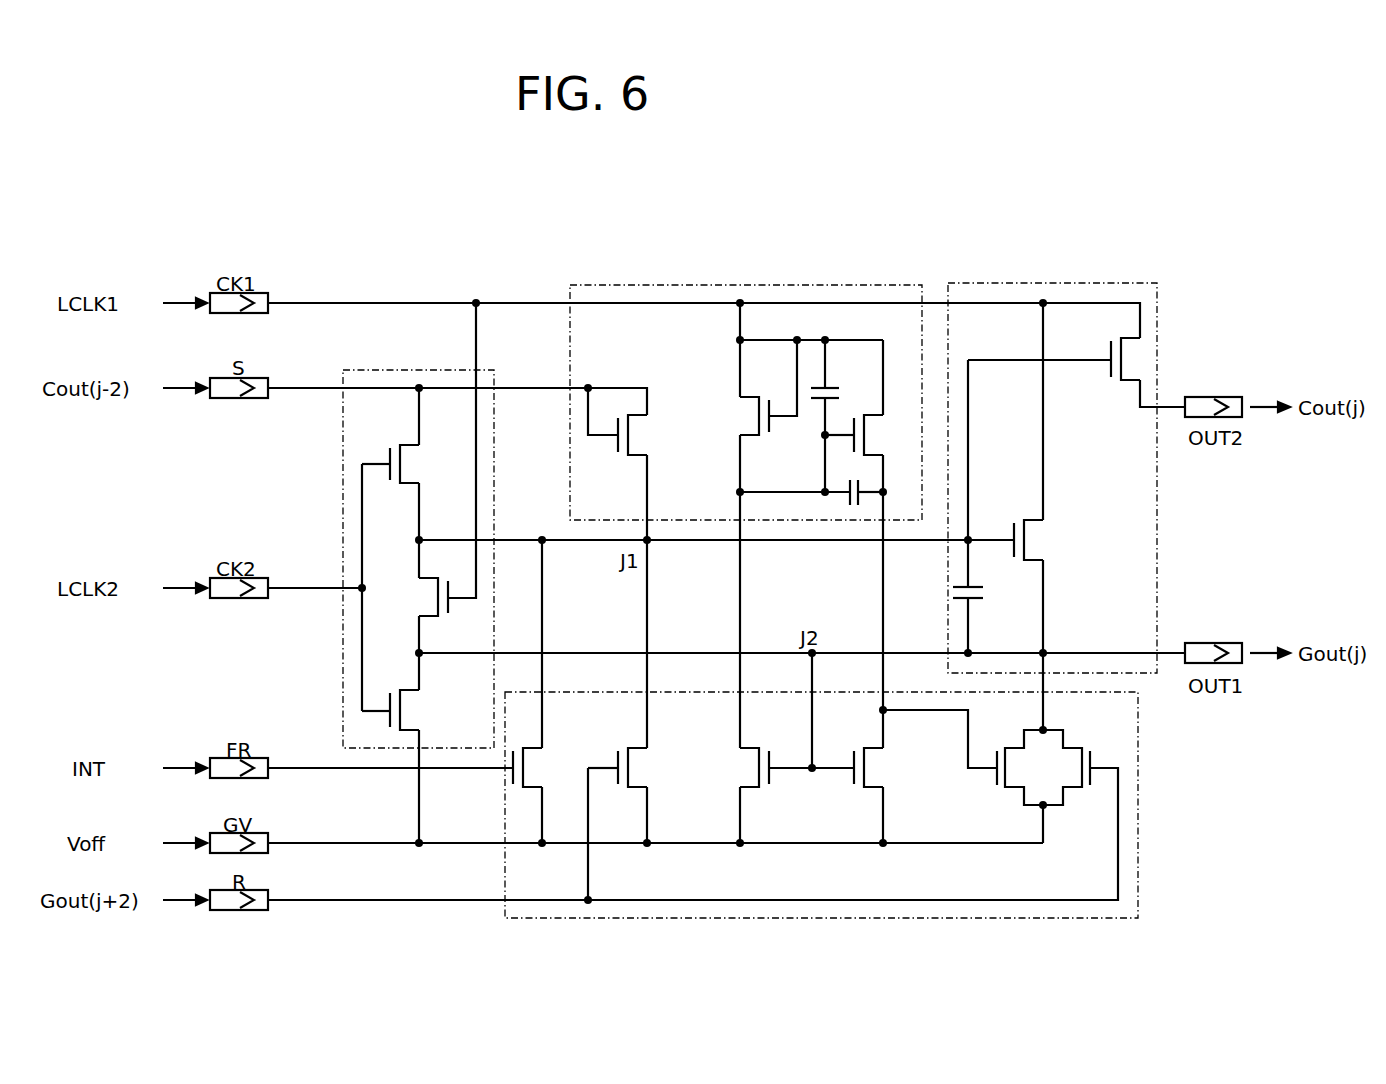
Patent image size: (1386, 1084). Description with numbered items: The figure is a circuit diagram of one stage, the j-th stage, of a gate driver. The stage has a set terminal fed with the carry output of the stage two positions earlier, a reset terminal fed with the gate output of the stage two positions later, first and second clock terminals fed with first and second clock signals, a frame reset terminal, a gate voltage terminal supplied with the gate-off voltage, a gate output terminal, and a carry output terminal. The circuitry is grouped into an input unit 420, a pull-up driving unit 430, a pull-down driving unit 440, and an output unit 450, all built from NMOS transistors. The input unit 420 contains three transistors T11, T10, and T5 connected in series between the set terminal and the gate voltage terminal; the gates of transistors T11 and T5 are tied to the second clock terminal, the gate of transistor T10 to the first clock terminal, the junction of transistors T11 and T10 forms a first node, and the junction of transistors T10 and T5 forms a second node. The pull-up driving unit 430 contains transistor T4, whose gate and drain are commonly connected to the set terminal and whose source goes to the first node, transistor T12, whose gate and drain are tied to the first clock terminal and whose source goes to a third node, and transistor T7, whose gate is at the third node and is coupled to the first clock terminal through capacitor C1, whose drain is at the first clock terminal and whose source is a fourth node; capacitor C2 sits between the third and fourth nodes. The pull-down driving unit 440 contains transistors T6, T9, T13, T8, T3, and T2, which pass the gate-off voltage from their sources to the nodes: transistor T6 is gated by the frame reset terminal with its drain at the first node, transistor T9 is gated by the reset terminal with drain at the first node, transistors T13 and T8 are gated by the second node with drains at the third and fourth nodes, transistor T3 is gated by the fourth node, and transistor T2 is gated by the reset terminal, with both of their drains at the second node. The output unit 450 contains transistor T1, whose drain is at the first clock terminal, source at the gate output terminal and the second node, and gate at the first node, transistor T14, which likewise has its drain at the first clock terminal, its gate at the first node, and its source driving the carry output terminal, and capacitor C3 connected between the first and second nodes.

The input unit 420 is at (418, 368).
The pull-up driving unit 430 is at (740, 283).
The pull-down driving unit 440 is at (1138, 805).
The output unit 450 is at (1050, 283).
The transistor T1 is at (1039, 540).
The transistor T2 is at (1082, 753).
The transistor T3 is at (1039, 767).
The transistor T4 is at (644, 435).
The transistor T5 is at (412, 710).
The transistor T6 is at (540, 767).
The transistor T7 is at (882, 435).
The transistor T8 is at (882, 767).
The transistor T9 is at (645, 767).
The transistor T10 is at (419, 597).
The transistor T11 is at (418, 464).
The transistor T12 is at (741, 416).
The transistor T13 is at (740, 767).
The transistor T14 is at (1141, 359).
The capacitor C1 is at (839, 379).
The capacitor C2 is at (843, 481).
The capacitor C3 is at (983, 595).